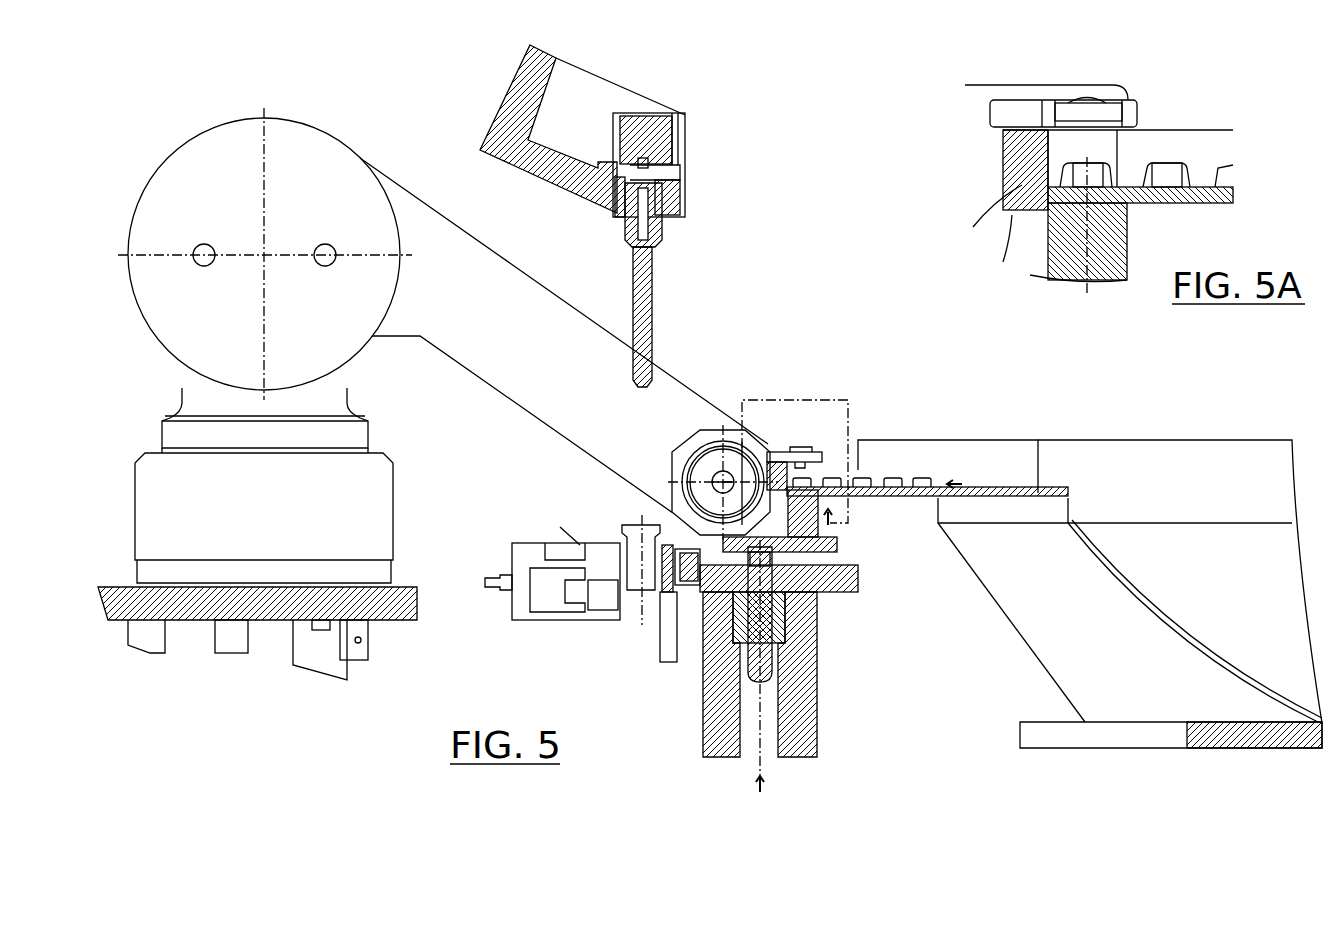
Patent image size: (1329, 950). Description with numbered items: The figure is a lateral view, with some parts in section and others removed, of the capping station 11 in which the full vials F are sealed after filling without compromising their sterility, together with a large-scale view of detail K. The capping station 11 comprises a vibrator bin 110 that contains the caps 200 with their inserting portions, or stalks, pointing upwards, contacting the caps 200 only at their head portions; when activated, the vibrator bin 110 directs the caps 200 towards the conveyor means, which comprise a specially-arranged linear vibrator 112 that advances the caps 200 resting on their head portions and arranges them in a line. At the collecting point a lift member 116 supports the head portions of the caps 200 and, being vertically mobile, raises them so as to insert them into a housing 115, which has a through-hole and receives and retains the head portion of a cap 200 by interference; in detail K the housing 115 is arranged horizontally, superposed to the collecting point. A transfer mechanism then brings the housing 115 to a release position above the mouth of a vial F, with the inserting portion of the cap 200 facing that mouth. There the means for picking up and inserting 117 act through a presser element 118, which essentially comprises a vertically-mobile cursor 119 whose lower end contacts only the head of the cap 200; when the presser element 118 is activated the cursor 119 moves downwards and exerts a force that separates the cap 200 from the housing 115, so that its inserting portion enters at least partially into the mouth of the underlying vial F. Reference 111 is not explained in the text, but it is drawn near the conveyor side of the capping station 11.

In FIG. 5, the capping station 11 is at (437, 137).
In FIG. 5, the vibrator bin 110 is at (1185, 428).
In FIG. 5, the guide plate 111 is at (990, 486).
In FIG. 5, the linear vibrator 112 is at (893, 505).
In FIG. 5A, the housing 115 is at (1077, 80).
In FIG. 5, the lift member 116 is at (808, 495).
In FIG. 5A, the lift member 116 is at (1043, 253).
In FIG. 5, the means for picking up and inserting 117 is at (783, 370).
In FIG. 5, the presser element 118 is at (708, 197).
In FIG. 5, the vertically-mobile cursor 119 is at (650, 290).
In FIG. 5A, the cap 200 is at (1172, 165).
In FIG. 5, the detail K is at (838, 395).
In FIG. 5, the vial F is at (638, 580).